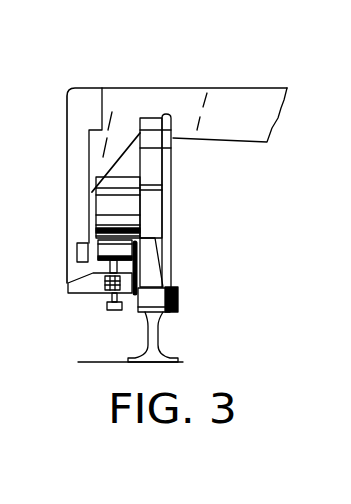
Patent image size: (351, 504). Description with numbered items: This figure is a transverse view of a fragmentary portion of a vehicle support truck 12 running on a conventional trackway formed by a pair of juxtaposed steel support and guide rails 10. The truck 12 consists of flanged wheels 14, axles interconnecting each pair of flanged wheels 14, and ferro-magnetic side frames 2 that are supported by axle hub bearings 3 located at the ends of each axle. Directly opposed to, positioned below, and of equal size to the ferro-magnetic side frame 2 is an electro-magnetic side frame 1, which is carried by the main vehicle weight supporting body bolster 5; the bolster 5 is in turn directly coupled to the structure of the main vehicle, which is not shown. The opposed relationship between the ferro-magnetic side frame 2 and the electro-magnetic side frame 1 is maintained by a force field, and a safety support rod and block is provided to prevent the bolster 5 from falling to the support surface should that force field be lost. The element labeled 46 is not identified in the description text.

The vehicle support truck 12 is at (142, 67).
The body bolster 5 is at (243, 88).
The axle hub bearing 3 is at (90, 193).
The flanged wheel 14 is at (171, 224).
The ferro-magnetic side frame 2 is at (97, 252).
The clamp block 46 is at (72, 283).
The electro-magnetic side frame 1 is at (104, 304).
The support and guide rail 10 is at (162, 340).